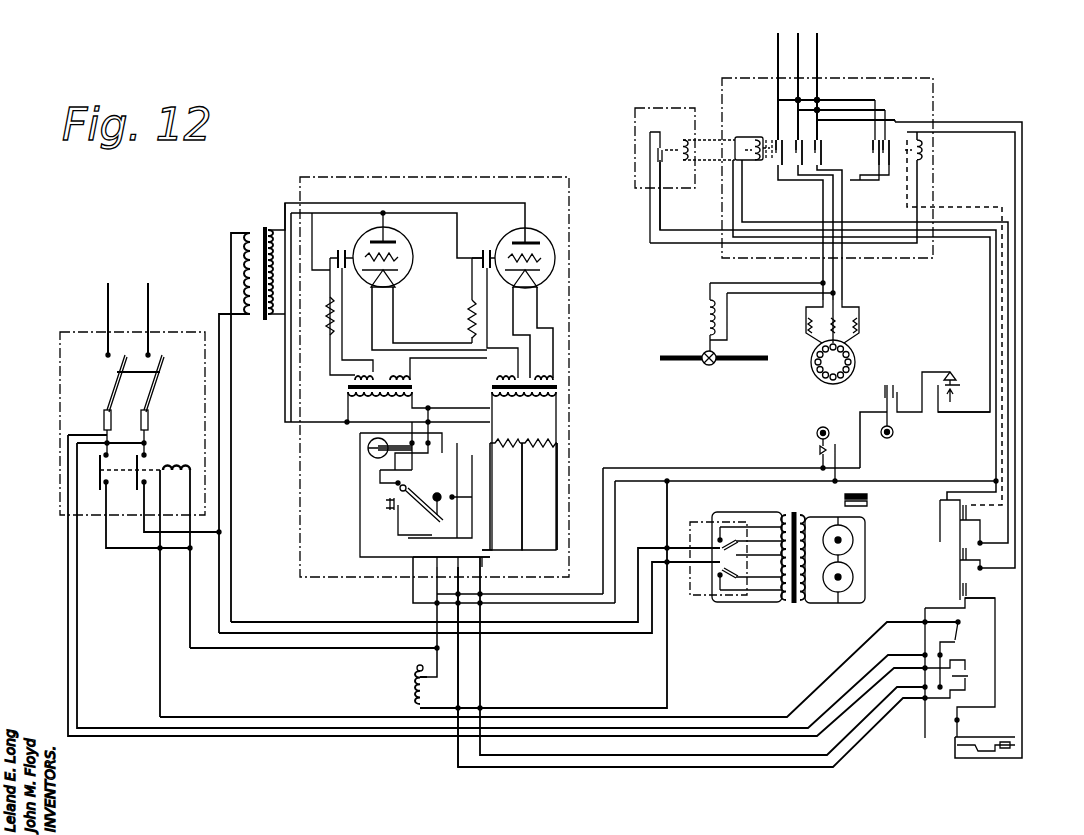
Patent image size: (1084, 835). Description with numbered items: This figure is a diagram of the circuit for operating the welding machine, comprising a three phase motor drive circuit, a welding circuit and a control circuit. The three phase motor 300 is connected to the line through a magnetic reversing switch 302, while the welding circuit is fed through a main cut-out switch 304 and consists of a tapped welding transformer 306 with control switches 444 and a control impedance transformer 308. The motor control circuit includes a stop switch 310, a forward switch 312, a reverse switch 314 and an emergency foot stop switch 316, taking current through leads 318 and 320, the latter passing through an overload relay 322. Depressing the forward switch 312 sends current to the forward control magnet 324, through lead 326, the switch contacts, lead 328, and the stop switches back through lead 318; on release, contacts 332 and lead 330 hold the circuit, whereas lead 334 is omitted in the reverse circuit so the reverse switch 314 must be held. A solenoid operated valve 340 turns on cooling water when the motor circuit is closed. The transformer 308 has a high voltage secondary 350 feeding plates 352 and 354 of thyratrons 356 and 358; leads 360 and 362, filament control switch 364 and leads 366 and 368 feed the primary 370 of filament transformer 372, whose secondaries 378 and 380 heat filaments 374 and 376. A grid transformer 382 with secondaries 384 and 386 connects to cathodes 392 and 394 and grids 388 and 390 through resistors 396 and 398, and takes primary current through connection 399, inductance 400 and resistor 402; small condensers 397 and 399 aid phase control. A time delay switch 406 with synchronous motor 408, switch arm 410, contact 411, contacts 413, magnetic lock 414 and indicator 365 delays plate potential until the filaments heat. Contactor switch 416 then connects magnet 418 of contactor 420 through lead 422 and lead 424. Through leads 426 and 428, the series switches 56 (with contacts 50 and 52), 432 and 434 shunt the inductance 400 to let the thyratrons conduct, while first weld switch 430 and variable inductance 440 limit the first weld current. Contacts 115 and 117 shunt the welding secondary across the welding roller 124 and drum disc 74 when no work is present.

The motor 300 is at (855, 362).
The magnetic reversing switch 302 is at (835, 97).
The main cut-out switch 304 is at (112, 420).
The welding transformer 306 is at (795, 603).
The control impedance transformer 308 is at (250, 233).
The stop switch 310 is at (975, 592).
The forward switch 312 is at (948, 515).
The reverse switch 314 is at (960, 553).
The emergency or foot stop switch 316 is at (960, 745).
The lead 318 is at (1000, 122).
The lead 320 is at (862, 120).
The overload relay 322 is at (850, 196).
The forward control magnet 324 is at (752, 137).
The lead 326 is at (1005, 240).
The lead 328 is at (985, 550).
The lead 330 is at (1008, 520).
The contacts 332 is at (785, 100).
The lead 334 is at (975, 207).
The solenoid operated valve 340 is at (705, 318).
The high voltage secondary 350 is at (268, 230).
The plate 352 is at (395, 244).
The plate 354 is at (540, 240).
The thyratron 356 is at (400, 257).
The thyratron 358 is at (555, 258).
The lead 360 is at (77, 578).
The lead 362 is at (68, 562).
The filament control switch 364 is at (968, 676).
The indicator 365 is at (368, 448).
The lead 366 is at (558, 452).
The lead 368 is at (486, 500).
The primary 370 is at (560, 398).
The filament transformer 372 is at (560, 387).
The filament 374 is at (392, 292).
The filament 376 is at (535, 282).
The secondary winding 378 is at (497, 378).
The secondary winding 380 is at (550, 377).
The grid transformer 382 is at (345, 392).
The secondary 384 is at (352, 372).
The secondary 386 is at (411, 375).
The grid 388 is at (398, 270).
The grid 390 is at (545, 256).
The cathode 392 is at (394, 282).
The cathode 394 is at (545, 270).
The resistor 396 is at (326, 318).
The condenser 397 is at (340, 250).
The resistor 398 is at (468, 325).
The connection 399 is at (486, 250).
The inductance 400 is at (505, 453).
The resistor 402 is at (538, 453).
The time delay switch 406 is at (400, 540).
The synchronous motor 408 is at (386, 510).
The switch arm 410 is at (405, 508).
The contact 411 is at (396, 483).
The contacts 413 is at (400, 488).
The magnetic lock 414 is at (392, 522).
The contactor switch 416 is at (960, 632).
The magnet 418 is at (185, 455).
The contactor 420 is at (138, 480).
The lead 422 is at (360, 455).
The lead 424 is at (470, 500).
The lead 426 is at (560, 580).
The lead 428 is at (524, 505).
The first weld switch 430 is at (828, 444).
The work switch 432 is at (960, 360).
The switch 434 is at (660, 130).
The variable inductance 440 is at (412, 694).
The control switches 444 is at (727, 600).
The contact 50 is at (905, 368).
The contact 52 is at (884, 370).
The timing switch 56 is at (890, 412).
The work support drum disc 74 is at (855, 582).
The flat contact plate 115 is at (868, 504).
The complementary plate 117 is at (868, 496).
The welding roller 124 is at (855, 542).